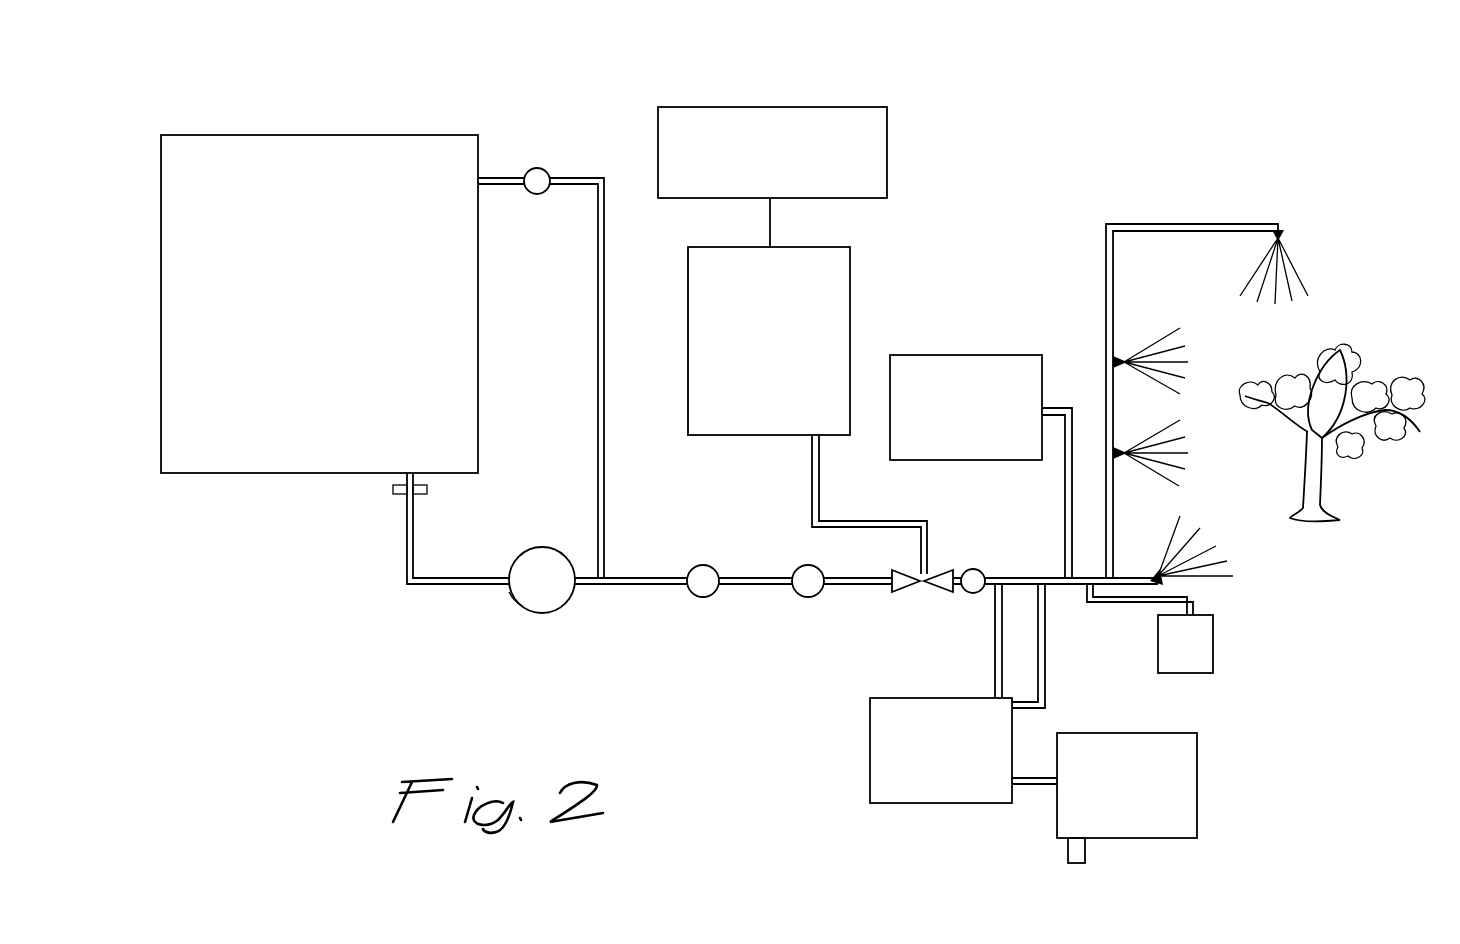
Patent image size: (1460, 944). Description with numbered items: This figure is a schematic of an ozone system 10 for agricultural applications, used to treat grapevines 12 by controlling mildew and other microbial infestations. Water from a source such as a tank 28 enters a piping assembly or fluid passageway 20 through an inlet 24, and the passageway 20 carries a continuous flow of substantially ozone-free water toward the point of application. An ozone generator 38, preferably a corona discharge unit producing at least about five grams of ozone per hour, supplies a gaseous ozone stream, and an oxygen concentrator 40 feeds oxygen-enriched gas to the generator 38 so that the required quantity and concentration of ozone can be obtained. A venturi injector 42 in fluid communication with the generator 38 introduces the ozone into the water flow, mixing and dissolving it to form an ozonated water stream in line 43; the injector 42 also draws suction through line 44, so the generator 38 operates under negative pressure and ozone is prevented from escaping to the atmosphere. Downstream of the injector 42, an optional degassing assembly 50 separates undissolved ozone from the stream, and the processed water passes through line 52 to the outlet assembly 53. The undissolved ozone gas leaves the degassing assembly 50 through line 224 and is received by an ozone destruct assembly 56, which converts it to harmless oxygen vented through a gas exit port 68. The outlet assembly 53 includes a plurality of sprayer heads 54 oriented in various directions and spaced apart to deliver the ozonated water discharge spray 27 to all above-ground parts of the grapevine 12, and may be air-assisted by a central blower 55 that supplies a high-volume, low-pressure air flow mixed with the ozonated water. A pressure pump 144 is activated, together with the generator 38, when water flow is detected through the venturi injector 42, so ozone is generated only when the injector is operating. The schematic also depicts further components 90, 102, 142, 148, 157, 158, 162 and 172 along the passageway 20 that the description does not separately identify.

The ozone system 10 is at (965, 158).
The grapevines 12 is at (1318, 494).
The fluid passageway 20 is at (640, 585).
The inlet 24 is at (393, 494).
The ozonated water discharge spray 27 is at (1290, 292).
The tank 28 is at (248, 212).
The ozone generator 38 is at (774, 424).
The oxygen concentrator 40 is at (773, 107).
The venturi injector 42 is at (912, 590).
The line 43 is at (995, 650).
The line 44 is at (812, 490).
The degassing assembly 50 is at (890, 803).
The line 52 is at (1045, 692).
The outlet assembly 53 is at (1187, 212).
The sprayer heads 54 is at (1282, 234).
The blower 55 is at (1192, 654).
The ozone destruct assembly 56 is at (1197, 810).
The gas exit port 68 is at (1085, 850).
The pump 90 is at (551, 618).
The dissolved ozone monitor 102 is at (980, 355).
The flow control valve 142 is at (796, 594).
The pressure pump 144 is at (517, 601).
The supply conduit 148 is at (407, 553).
The return conduit 157 is at (597, 390).
The return valve 158 is at (539, 166).
The check valve 162 is at (973, 568).
The shutoff valve 172 is at (703, 564).
The line 224 is at (1030, 785).